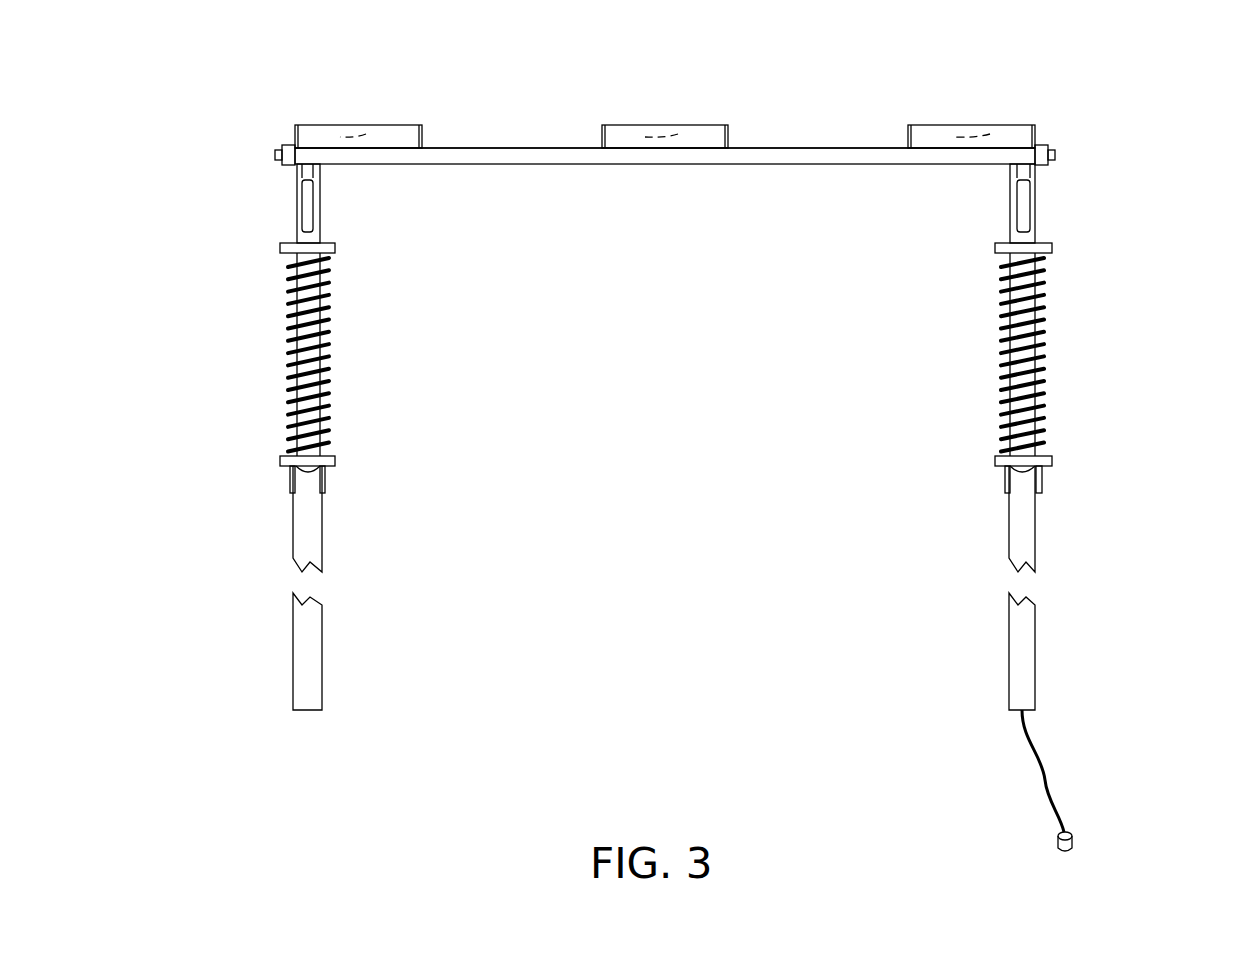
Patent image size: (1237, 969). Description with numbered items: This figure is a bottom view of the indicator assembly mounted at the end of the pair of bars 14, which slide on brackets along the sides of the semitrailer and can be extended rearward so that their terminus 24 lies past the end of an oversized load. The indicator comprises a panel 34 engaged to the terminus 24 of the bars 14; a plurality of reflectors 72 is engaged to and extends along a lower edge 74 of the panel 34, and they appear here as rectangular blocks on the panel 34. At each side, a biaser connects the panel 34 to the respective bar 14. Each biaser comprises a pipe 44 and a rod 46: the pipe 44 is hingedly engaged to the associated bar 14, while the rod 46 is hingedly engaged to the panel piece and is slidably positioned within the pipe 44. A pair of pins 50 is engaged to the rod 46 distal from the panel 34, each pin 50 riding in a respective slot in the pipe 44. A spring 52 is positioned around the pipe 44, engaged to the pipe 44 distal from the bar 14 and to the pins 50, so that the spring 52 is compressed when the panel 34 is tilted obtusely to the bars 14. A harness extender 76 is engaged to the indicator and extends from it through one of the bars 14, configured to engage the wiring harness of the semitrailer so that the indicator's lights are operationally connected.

The bar 14 is at (1010, 527).
The terminus 24 is at (302, 170).
The panel 34 is at (808, 155).
The pipe 44 is at (307, 357).
The rod 46 is at (308, 207).
The pin 50 is at (322, 485).
The spring 52 is at (296, 292).
The reflector 72 is at (368, 133).
The lower edge 74 is at (540, 157).
The harness extender 76 is at (1046, 767).